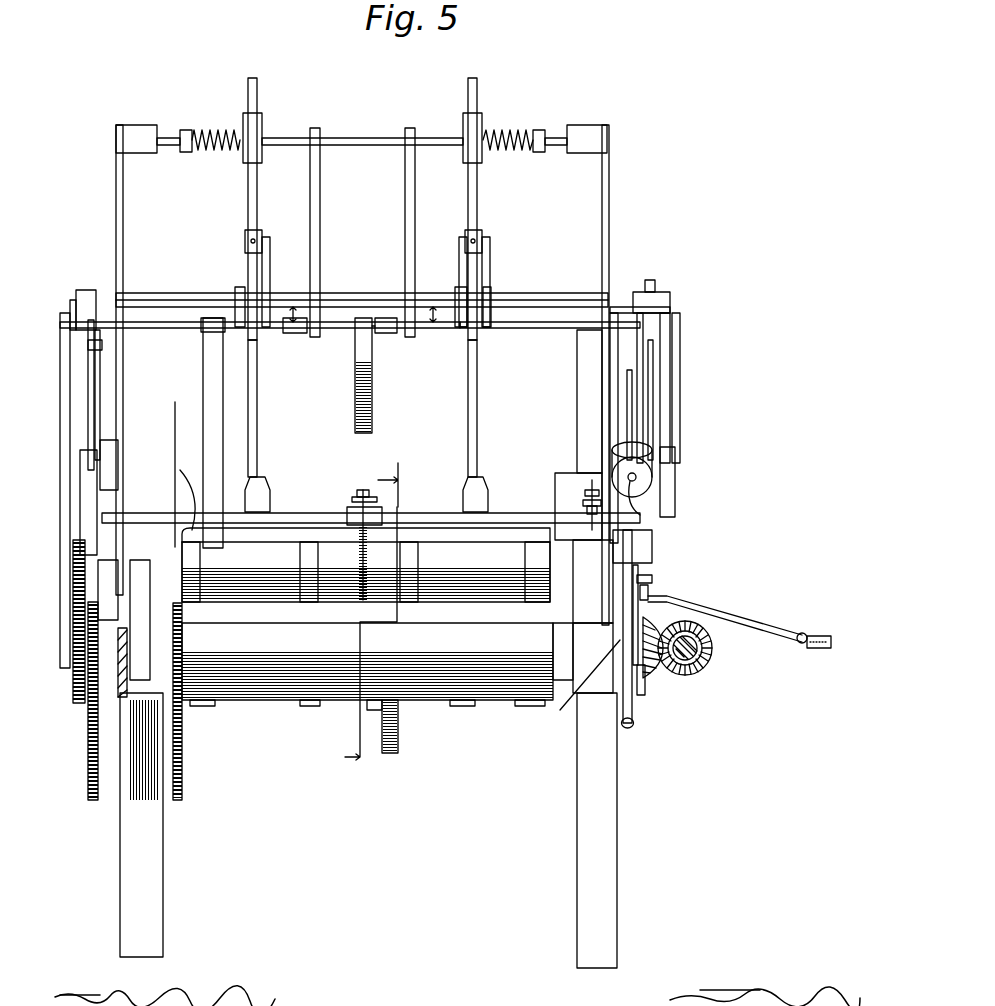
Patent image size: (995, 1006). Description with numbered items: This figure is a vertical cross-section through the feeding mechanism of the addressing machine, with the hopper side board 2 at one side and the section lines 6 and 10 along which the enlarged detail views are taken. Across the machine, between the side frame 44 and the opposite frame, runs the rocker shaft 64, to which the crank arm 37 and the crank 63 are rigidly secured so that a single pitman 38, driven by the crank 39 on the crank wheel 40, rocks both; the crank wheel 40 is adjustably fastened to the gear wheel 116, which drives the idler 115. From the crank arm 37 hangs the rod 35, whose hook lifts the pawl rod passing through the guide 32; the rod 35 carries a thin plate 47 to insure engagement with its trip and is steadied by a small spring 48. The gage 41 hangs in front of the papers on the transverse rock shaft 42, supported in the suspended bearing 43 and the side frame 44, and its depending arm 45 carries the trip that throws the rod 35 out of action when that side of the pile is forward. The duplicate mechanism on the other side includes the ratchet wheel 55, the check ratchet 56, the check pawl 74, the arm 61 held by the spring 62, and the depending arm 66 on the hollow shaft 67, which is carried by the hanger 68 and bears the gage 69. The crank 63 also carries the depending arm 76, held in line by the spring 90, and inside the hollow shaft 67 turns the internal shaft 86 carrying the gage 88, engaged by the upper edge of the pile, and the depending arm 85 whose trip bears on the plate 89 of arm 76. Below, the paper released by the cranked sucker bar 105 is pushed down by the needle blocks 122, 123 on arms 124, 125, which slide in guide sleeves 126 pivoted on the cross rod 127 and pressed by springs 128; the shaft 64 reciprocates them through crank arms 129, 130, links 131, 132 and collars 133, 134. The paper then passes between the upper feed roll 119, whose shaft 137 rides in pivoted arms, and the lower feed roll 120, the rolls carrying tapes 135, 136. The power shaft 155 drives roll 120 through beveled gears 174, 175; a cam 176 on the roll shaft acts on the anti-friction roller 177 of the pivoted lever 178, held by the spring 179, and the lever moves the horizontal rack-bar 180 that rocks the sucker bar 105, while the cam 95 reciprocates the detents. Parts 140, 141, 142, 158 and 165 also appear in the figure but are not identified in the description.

The side board 2 is at (172, 434).
The section line 6— 6 is at (372, 616).
The section line 10— 10 is at (364, 337).
The guide 32 is at (112, 440).
The rod 35 is at (96, 400).
The crank arm 37 is at (80, 305).
The pitman 38 is at (64, 368).
The crank 39 is at (73, 670).
The crank wheel 40 is at (72, 675).
The gage 41 is at (218, 452).
The rock shaft 42 is at (178, 329).
The suspended bearing 43 is at (304, 333).
The side frame 44 is at (124, 266).
The depending arm 45 is at (102, 346).
The thin projection or plate 47 is at (80, 476).
The spring 48 is at (90, 382).
The ratchet wheel 55 is at (645, 688).
The ratchet wheel 56 is at (648, 590).
The arm 61 is at (706, 388).
The spring 62 is at (643, 356).
The crank 63 is at (657, 295).
The shaft 64 is at (542, 293).
The depending arm 66 is at (653, 392).
The shaft 67 is at (576, 329).
The hanger 68 is at (410, 292).
The gage 69 is at (577, 442).
The check pawl 74 is at (652, 579).
The depending arm 76 is at (680, 392).
The depending arm 85 is at (633, 402).
The internal shaft 86 is at (386, 333).
The gage 88 is at (372, 412).
The plate 89 is at (652, 516).
The spring 90 is at (670, 370).
The cam 95 is at (392, 753).
The sucker bar 105 is at (382, 506).
The idler 115 is at (655, 668).
The gear wheel 116 is at (124, 632).
The upper feed roll 119 is at (252, 582).
The lower feed roll 120 is at (270, 700).
The needle block 122 is at (270, 498).
The needle block 123 is at (463, 498).
The arm 124 is at (258, 422).
The arm 125 is at (468, 408).
The guide sleeves 126 is at (262, 118).
The cross rod 127 is at (358, 137).
The springs 128 is at (217, 152).
The crank arm 129 is at (236, 292).
The crank arm 130 is at (488, 300).
The link 131 is at (271, 276).
The link 132 is at (490, 258).
The collar 133 is at (246, 240).
The collar 134 is at (466, 240).
The tapes 135 is at (205, 538).
The tapes 136 is at (200, 706).
The shaft 137 is at (540, 602).
The valve 140 is at (590, 488).
The housing 141 is at (560, 500).
The nut 142 is at (590, 516).
The power shaft 155 is at (700, 660).
The hook 158 is at (180, 470).
The frame bar 165 is at (609, 282).
The beveled gear 174 is at (712, 658).
The beveled gear 175 is at (662, 598).
The cam 176 is at (632, 720).
The anti-friction roller 177 is at (633, 600).
The pivoted lever 178 is at (560, 700).
The spring 179 is at (628, 728).
The horizontal rack-bar 180 is at (652, 530).